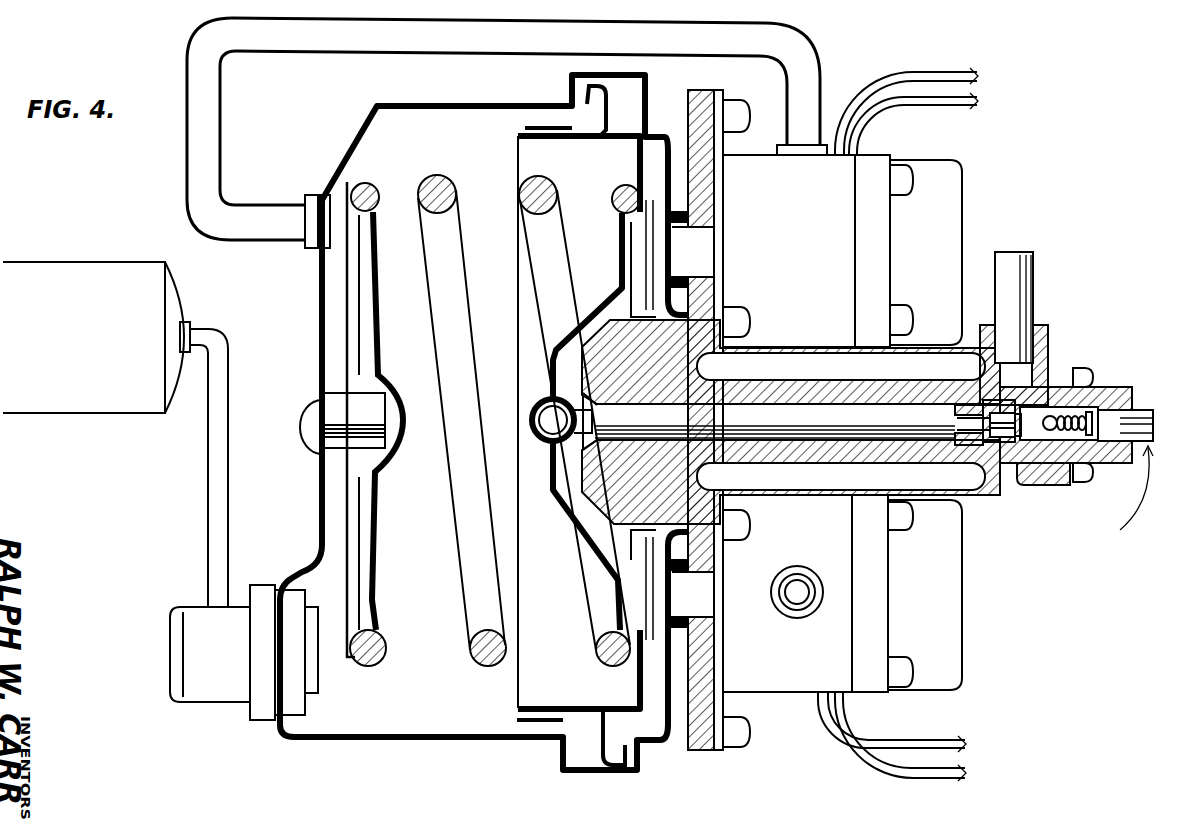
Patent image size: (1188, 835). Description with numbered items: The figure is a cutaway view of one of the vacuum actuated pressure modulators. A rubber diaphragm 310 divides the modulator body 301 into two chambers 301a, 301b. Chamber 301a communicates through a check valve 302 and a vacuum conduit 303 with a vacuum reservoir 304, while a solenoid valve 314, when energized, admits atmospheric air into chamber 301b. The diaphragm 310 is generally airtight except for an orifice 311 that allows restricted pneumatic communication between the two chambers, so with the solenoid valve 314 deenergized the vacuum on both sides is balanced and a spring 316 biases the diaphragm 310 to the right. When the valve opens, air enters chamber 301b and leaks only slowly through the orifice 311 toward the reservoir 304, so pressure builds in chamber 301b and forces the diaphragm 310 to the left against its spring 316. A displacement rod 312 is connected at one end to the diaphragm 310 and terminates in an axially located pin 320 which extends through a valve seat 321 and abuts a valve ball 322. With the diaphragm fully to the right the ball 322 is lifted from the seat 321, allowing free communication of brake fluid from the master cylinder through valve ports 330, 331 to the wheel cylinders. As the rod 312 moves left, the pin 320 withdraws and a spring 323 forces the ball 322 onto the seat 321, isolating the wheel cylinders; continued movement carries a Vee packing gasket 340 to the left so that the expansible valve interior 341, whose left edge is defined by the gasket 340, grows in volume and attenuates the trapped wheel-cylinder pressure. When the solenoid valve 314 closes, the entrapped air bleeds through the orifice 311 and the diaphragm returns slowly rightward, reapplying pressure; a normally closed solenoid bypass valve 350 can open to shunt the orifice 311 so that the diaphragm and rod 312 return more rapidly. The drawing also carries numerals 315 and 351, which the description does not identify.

The modulator body 301 is at (455, 104).
The modulator chamber 301a is at (600, 687).
The modulator chamber 301b is at (650, 275).
The check valve 302 is at (222, 705).
The vacuum conduit 303 is at (228, 486).
The vacuum reservoir 304 is at (70, 262).
The rubber diaphragm 310 is at (620, 256).
The orifice 311 is at (615, 589).
The displacement rod 312 is at (729, 443).
The solenoid valve 314 is at (964, 597).
The port 315 is at (771, 593).
The spring 316 is at (374, 662).
The pin 320 is at (1022, 457).
The valve seat 321 is at (1053, 410).
The valve ball 322 is at (1050, 448).
The spring 323 is at (1113, 458).
The valve port 330 is at (1150, 400).
The valve port 331 is at (1035, 298).
The Vee packing gasket 340 is at (977, 404).
The expansible valve interior 341 is at (993, 412).
The solenoid bypass valve 350 is at (967, 190).
The vacuum pipe loop 351 is at (422, 54).